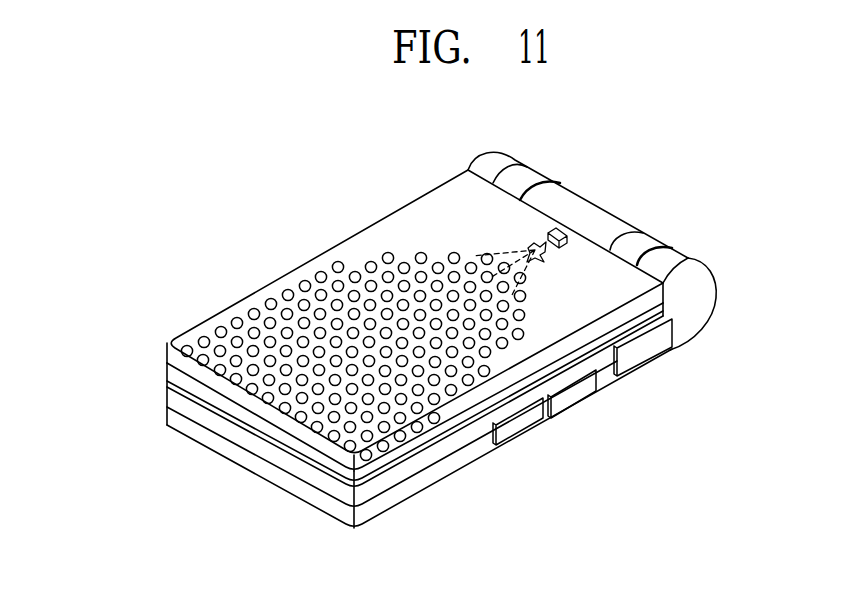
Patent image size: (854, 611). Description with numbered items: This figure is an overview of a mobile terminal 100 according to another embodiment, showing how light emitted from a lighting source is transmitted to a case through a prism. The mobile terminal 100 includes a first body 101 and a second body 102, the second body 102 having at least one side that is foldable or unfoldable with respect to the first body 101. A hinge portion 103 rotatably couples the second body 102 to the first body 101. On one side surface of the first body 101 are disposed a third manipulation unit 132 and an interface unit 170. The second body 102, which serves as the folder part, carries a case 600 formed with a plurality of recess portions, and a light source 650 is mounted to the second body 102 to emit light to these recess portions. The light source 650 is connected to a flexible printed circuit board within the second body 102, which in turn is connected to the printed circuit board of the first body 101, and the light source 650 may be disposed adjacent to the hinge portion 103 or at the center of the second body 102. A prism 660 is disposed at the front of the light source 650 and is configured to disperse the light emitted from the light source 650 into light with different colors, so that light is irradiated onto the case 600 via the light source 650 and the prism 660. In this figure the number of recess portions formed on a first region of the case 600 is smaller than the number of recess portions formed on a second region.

The mobile terminal 100 is at (253, 218).
The first body 101 is at (161, 397).
The second body 102 is at (162, 360).
The hinge portion 103 is at (488, 165).
The third manipulation unit 132 is at (572, 398).
The interface unit 170 is at (642, 356).
The case 600 is at (252, 307).
The light source 650 is at (563, 237).
The prism 660 is at (538, 243).